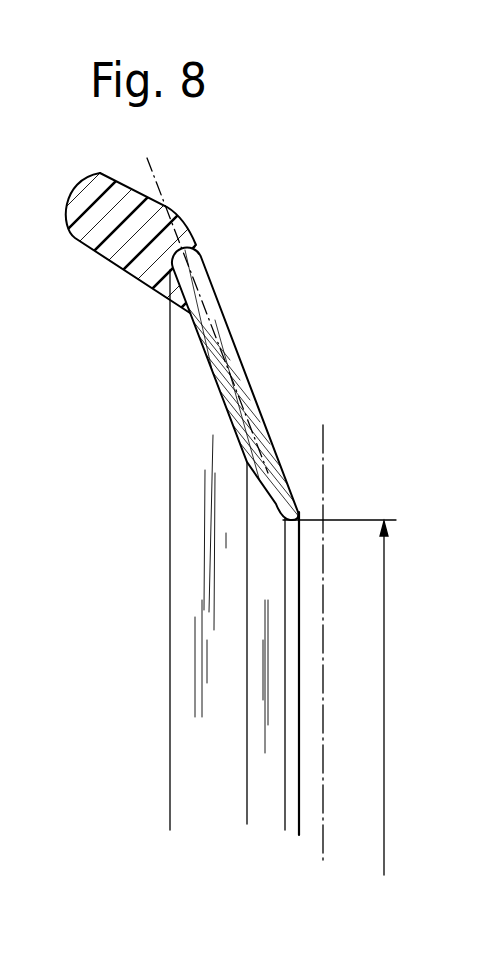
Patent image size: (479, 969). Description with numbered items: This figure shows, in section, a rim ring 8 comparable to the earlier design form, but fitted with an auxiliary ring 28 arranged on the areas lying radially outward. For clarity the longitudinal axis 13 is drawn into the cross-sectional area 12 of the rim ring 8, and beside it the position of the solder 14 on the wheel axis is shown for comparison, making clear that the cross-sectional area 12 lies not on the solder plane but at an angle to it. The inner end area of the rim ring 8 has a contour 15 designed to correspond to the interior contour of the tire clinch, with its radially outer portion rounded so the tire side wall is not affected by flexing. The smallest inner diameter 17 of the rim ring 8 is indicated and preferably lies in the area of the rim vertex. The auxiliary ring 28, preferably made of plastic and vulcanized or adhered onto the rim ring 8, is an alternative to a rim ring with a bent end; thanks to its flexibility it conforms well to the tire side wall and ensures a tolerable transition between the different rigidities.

The rim ring 8 is at (190, 675).
The cross-sectional area 12 is at (246, 403).
The longitudinal axis 13 is at (162, 195).
The solder 14 is at (323, 462).
The contour 15 is at (273, 500).
The smallest inner diameter 17 is at (384, 687).
The auxiliary ring 28 is at (150, 255).